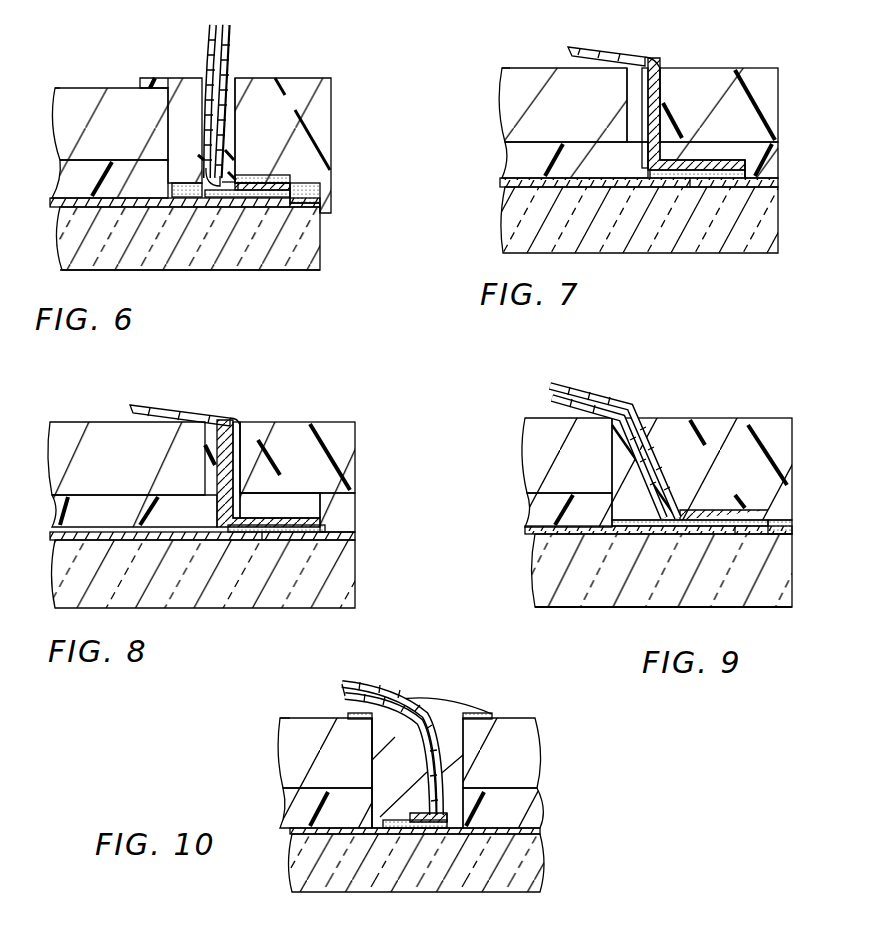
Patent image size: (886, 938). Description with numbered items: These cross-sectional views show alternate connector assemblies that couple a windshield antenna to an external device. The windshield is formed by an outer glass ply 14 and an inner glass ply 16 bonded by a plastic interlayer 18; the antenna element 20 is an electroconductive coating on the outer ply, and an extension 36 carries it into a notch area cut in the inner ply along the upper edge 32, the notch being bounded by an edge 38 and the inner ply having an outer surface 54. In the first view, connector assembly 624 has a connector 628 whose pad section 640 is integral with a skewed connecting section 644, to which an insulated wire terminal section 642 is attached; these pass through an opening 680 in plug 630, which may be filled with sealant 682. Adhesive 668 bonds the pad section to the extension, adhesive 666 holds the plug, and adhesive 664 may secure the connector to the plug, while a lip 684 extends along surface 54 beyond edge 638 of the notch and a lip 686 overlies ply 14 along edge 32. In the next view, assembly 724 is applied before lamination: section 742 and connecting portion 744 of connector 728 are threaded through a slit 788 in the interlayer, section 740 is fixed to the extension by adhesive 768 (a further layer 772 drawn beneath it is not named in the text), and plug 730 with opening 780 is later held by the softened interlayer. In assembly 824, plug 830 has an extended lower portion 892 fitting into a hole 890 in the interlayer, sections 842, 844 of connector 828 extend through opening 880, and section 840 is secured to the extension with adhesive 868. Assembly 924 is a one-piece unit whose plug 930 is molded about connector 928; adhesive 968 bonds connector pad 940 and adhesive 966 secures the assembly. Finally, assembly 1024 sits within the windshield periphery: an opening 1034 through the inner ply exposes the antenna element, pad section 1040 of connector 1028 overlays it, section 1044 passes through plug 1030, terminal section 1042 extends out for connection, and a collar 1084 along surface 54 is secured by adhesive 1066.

In FIG. 6, the outer glass ply 14 is at (68, 238).
In FIG. 7, the outer glass ply 14 is at (505, 215).
In FIG. 8, the outer glass ply 14 is at (70, 568).
In FIG. 9, the outer glass ply 14 is at (533, 575).
In FIG. 10, the outer glass ply 14 is at (300, 862).
In FIG. 6, the inner glass ply 16 is at (55, 104).
In FIG. 7, the inner glass ply 16 is at (500, 88).
In FIG. 8, the inner glass ply 16 is at (52, 444).
In FIG. 9, the inner glass ply 16 is at (530, 436).
In FIG. 10, the inner glass ply 16 is at (285, 733).
In FIG. 6, the plastic interlayer 18 is at (62, 176).
In FIG. 7, the plastic interlayer 18 is at (510, 152).
In FIG. 8, the plastic interlayer 18 is at (52, 503).
In FIG. 9, the plastic interlayer 18 is at (530, 507).
In FIG. 10, the plastic interlayer 18 is at (285, 805).
In FIG. 10, the antenna element 20 is at (300, 835).
In FIG. 6, the upper edge 32 is at (322, 268).
In FIG. 6, the extension 36 is at (55, 203).
In FIG. 7, the extension 36 is at (505, 181).
In FIG. 8, the extension 36 is at (55, 536).
In FIG. 9, the extension 36 is at (530, 531).
In FIG. 7, the edge of notch area 38 is at (627, 118).
In FIG. 6, the surface of inner ply 54 is at (80, 88).
In FIG. 7, the surface of inner ply 54 is at (538, 68).
In FIG. 10, the surface of inner ply 54 is at (297, 718).
In FIG. 6, the connector assembly 624 is at (318, 47).
In FIG. 6, the connector 628 is at (210, 45).
In FIG. 6, the plug 630 is at (335, 103).
In FIG. 6, the edge of notch area 638 is at (160, 110).
In FIG. 6, the pad section 640 is at (285, 205).
In FIG. 6, the terminal section 642 is at (232, 60).
In FIG. 6, the connecting section 644 is at (232, 150).
In FIG. 6, the adhesive 664 is at (290, 178).
In FIG. 6, the adhesive 666 is at (325, 185).
In FIG. 6, the adhesive 668 is at (236, 190).
In FIG. 6, the opening 680 is at (210, 170).
In FIG. 6, the sealant 682 is at (228, 130).
In FIG. 6, the lip 684 is at (148, 78).
In FIG. 6, the lip 686 is at (332, 208).
In FIG. 7, the connector assembly 724 is at (730, 32).
In FIG. 7, the connector 728 is at (650, 68).
In FIG. 7, the plug 730 is at (766, 68).
In FIG. 7, the section 740 is at (735, 180).
In FIG. 7, the section 742 is at (640, 58).
In FIG. 7, the connecting portion 744 is at (662, 95).
In FIG. 7, the adhesive 768 is at (690, 188).
In FIG. 7, the conductive layer 772 is at (745, 174).
In FIG. 7, the opening 780 is at (643, 92).
In FIG. 7, the slit 788 is at (640, 160).
In FIG. 8, the connector assembly 824 is at (332, 390).
In FIG. 8, the connector 828 is at (230, 420).
In FIG. 8, the plug 830 is at (355, 430).
In FIG. 8, the section 840 is at (310, 532).
In FIG. 8, the section 842 is at (162, 405).
In FIG. 8, the section 844 is at (245, 445).
In FIG. 8, the adhesive 868 is at (260, 540).
In FIG. 8, the opening 880 is at (215, 445).
In FIG. 8, the hole 890 is at (315, 500).
In FIG. 8, the extended lower portion 892 is at (345, 500).
In FIG. 9, the connector assembly 924 is at (716, 396).
In FIG. 9, the connector 928 is at (598, 388).
In FIG. 9, the plug 930 is at (792, 440).
In FIG. 9, the connector pad 940 is at (722, 510).
In FIG. 9, the adhesive 966 is at (794, 530).
In FIG. 9, the adhesive 968 is at (740, 535).
In FIG. 10, the connector assembly 1024 is at (470, 671).
In FIG. 10, the connector 1028 is at (400, 700).
In FIG. 10, the plug 1030 is at (478, 702).
In FIG. 10, the opening 1034 is at (362, 744).
In FIG. 10, the pad section 1040 is at (378, 820).
In FIG. 10, the terminal section 1042 is at (362, 685).
In FIG. 10, the section 1044 is at (448, 790).
In FIG. 10, the adhesive 1066 is at (525, 738).
In FIG. 10, the collar 1084 is at (478, 712).